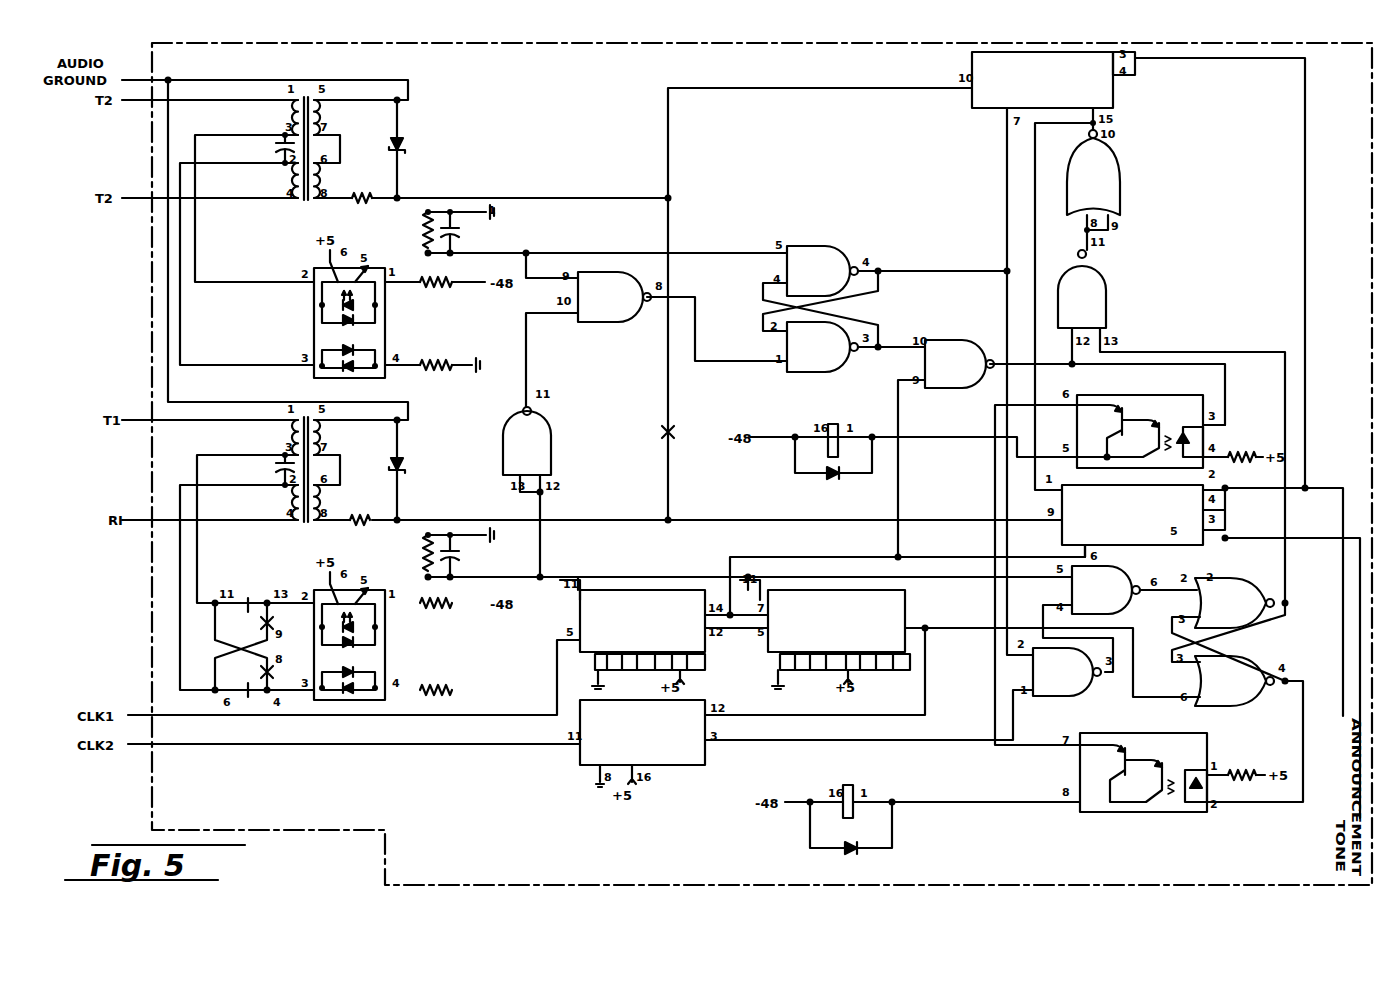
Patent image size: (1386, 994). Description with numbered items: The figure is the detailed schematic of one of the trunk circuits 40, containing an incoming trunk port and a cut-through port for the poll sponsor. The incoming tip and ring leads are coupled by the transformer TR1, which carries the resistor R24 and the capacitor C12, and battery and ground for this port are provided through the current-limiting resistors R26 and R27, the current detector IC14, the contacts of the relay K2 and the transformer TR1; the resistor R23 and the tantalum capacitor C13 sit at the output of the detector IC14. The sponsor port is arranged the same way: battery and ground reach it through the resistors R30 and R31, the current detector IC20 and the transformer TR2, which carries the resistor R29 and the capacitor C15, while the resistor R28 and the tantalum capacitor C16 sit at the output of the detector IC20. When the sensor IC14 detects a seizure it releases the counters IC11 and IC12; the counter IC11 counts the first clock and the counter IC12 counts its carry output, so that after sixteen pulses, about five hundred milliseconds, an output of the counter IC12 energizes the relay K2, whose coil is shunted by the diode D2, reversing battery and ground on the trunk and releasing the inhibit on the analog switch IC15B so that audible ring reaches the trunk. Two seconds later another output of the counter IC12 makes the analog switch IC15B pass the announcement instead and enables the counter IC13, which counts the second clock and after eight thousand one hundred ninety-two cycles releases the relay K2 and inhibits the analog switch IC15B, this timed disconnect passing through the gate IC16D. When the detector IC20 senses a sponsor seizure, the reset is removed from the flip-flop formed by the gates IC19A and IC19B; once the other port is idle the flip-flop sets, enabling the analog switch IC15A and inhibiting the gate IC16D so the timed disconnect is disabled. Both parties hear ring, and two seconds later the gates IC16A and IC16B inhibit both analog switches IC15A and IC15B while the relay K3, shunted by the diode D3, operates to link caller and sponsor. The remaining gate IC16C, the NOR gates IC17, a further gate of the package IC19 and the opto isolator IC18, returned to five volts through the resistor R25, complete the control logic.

The trunk circuit 40 is at (190, 40).
The transformer TR1 is at (348, 453).
The transformer TR2 is at (347, 131).
The capacitor C12 is at (267, 470).
The capacitor C13 is at (465, 556).
The capacitor C15 is at (269, 149).
The capacitor C16 is at (465, 232).
The resistor R23 is at (408, 553).
The resistor R24 is at (362, 512).
The resistor R25 is at (1239, 767).
The current limiting resistor R26 is at (435, 595).
The current limiting resistor R27 is at (435, 681).
The resistor R28 is at (409, 230).
The resistor R29 is at (359, 190).
The resistor R30 is at (435, 272).
The resistor R31 is at (435, 356).
The counter IC11 is at (632, 625).
The counter IC12 is at (825, 625).
The counter IC13 is at (642, 732).
The sensor IC14 is at (482, 486).
The analog switch IC15A is at (1053, 80).
The analog switch IC15B is at (1143, 515).
The NAND gate IC16A is at (1082, 289).
The NAND gate IC16B is at (959, 364).
The NAND gate IC16C is at (1106, 590).
The NAND gate IC16D is at (1067, 672).
The NOR gate IC17 is at (1170, 418).
The opto isolator IC18 is at (1142, 595).
The NAND gate IC19 is at (527, 449).
The flip-flop IC19A is at (822, 271).
The flip-flop IC19B is at (822, 347).
The sensor IC20 is at (349, 314).
The relay K2 is at (553, 713).
The relay K3 is at (767, 438).
The diode D2 is at (846, 858).
The diode D3 is at (830, 483).